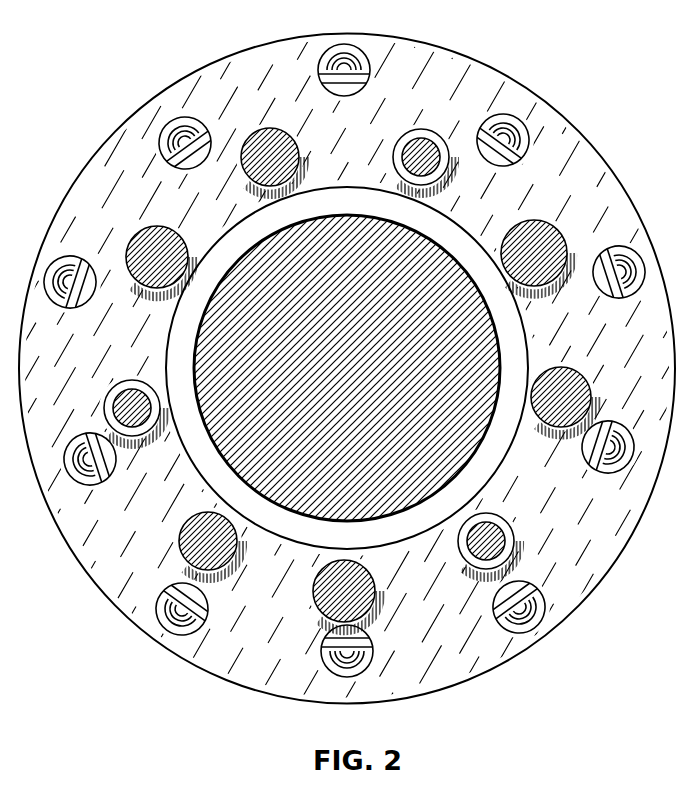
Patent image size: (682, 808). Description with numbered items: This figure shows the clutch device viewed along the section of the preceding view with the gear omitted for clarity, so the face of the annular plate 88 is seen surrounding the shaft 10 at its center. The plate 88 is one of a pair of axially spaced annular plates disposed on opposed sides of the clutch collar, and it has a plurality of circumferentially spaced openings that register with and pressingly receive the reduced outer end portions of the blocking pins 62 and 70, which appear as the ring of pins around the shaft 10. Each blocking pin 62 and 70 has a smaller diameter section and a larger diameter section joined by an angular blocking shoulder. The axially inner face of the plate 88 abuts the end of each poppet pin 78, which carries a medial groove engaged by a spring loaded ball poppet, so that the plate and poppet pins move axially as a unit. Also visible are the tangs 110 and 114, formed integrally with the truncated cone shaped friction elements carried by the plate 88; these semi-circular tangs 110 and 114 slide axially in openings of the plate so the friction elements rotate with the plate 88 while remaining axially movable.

The annular plate 88 is at (406, 60).
The shaft 10 is at (347, 368).
The blocking pin 62 is at (277, 132).
The blocking pin 70 is at (426, 140).
The poppet pin 78 is at (539, 259).
The tang 110 is at (175, 141).
The tang 114 is at (86, 284).